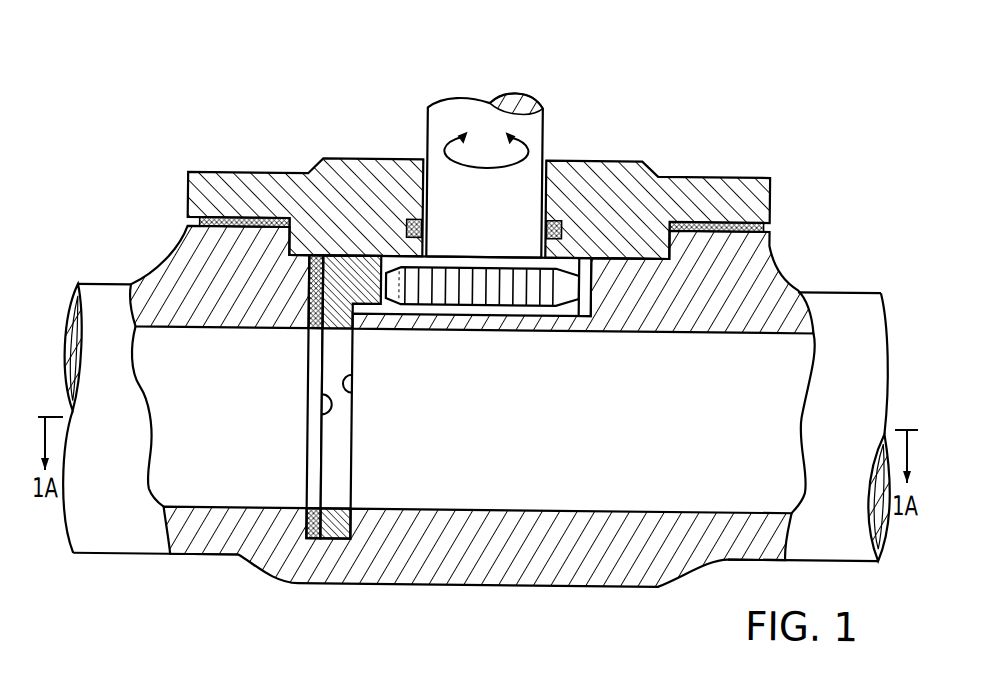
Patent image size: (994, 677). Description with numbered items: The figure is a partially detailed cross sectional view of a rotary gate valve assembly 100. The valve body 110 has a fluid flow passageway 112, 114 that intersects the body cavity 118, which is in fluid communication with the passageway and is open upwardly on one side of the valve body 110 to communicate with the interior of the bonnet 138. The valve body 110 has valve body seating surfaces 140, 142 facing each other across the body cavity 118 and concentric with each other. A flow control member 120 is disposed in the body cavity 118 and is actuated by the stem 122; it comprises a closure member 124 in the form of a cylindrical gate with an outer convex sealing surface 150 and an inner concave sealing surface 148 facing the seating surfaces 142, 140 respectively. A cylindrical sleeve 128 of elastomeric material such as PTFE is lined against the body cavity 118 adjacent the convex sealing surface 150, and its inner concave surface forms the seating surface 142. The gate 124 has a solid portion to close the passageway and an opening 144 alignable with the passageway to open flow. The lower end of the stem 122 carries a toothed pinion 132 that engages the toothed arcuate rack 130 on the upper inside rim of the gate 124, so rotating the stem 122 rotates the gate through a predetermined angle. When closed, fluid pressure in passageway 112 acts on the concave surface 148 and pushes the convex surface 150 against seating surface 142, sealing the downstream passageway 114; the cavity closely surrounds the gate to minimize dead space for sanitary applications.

The valve assembly 100 is at (734, 139).
The valve body 110 is at (796, 270).
The fluid flow passageway 112 is at (782, 425).
The fluid flow passageway 114 is at (176, 431).
The body cavity 118 is at (579, 266).
The flow control member 120 is at (336, 274).
The stem 122 is at (544, 129).
The closure member 124 is at (332, 540).
The cylindrical sleeve 128 is at (315, 360).
The toothed arcuate rack 130 is at (389, 303).
The toothed pinion 132 is at (566, 291).
The bonnet 138 is at (768, 202).
The valve body seating surface 140 is at (352, 401).
The valve body seating surface 142 is at (320, 423).
The opening 144 is at (349, 453).
The inner concave sealing surface 148 is at (353, 464).
The outer convex sealing surface 150 is at (321, 475).